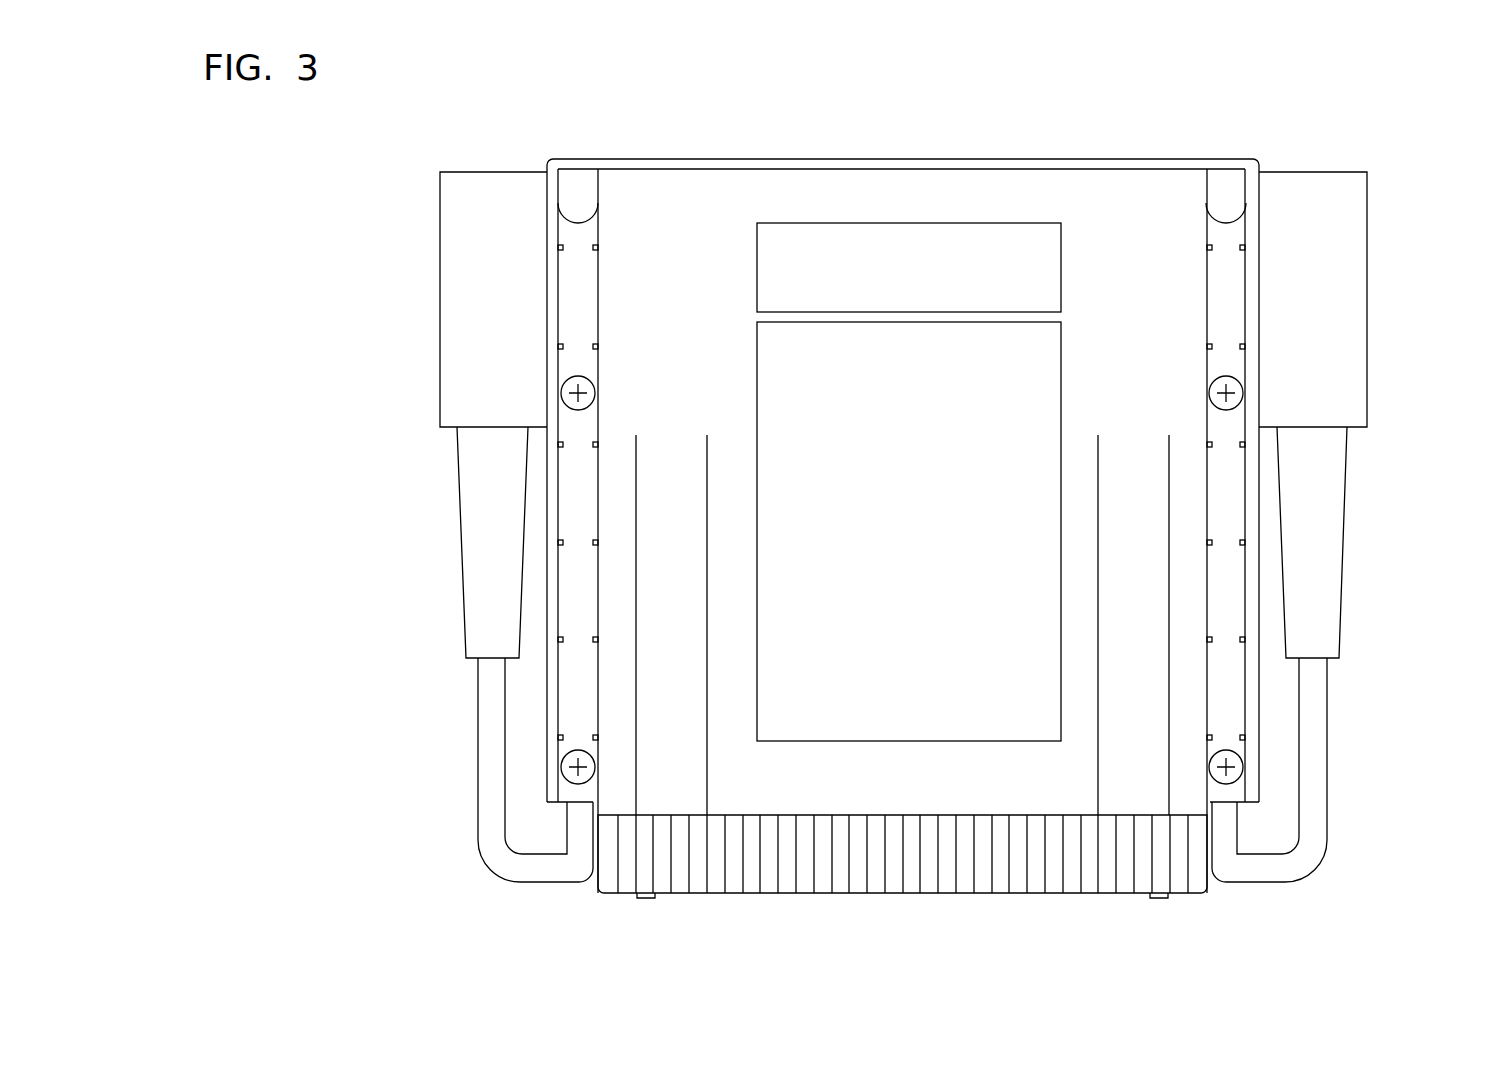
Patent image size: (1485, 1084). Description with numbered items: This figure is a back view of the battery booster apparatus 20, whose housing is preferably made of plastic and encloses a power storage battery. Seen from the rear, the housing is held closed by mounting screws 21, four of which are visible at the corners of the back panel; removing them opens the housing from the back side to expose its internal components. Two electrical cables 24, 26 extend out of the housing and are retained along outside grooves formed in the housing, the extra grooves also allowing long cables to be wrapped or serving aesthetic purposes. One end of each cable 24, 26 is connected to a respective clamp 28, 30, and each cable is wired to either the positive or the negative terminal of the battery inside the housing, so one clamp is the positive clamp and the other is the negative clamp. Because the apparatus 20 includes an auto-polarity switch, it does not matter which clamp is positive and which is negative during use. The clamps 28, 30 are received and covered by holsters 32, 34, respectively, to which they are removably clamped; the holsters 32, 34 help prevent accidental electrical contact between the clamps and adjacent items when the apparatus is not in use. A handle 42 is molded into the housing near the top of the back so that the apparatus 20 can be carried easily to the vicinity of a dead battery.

The battery booster apparatus 20 is at (1138, 97).
The mounting screws 21 is at (590, 385).
The electrical cable 24 is at (490, 777).
The electrical cable 26 is at (1313, 787).
The clamp 28 is at (472, 542).
The clamp 30 is at (1328, 540).
The holster 32 is at (492, 190).
The holster 34 is at (1343, 231).
The handle 42 is at (1038, 270).